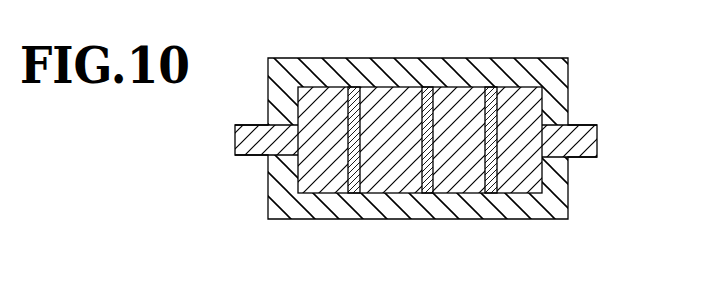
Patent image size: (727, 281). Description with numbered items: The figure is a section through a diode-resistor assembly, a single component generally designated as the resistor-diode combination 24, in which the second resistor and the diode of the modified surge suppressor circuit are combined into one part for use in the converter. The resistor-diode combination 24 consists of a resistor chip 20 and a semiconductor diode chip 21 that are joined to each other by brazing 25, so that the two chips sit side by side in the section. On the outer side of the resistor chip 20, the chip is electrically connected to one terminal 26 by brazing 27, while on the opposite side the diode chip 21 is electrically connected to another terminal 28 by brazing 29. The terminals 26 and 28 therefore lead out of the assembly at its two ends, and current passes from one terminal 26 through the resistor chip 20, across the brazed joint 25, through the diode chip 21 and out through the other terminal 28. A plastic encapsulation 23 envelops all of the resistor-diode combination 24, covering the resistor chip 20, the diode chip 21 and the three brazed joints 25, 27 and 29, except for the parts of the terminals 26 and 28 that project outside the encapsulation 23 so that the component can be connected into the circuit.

The resistor chip 20 is at (395, 178).
The semiconductor diode chip 21 is at (468, 170).
The plastic encapsulation 23 is at (508, 68).
The resistor-diode combination 24 is at (589, 69).
The brazing 25 is at (428, 170).
The terminal 26 is at (262, 128).
The brazing 27 is at (347, 178).
The terminal 28 is at (582, 126).
The brazing 29 is at (530, 176).